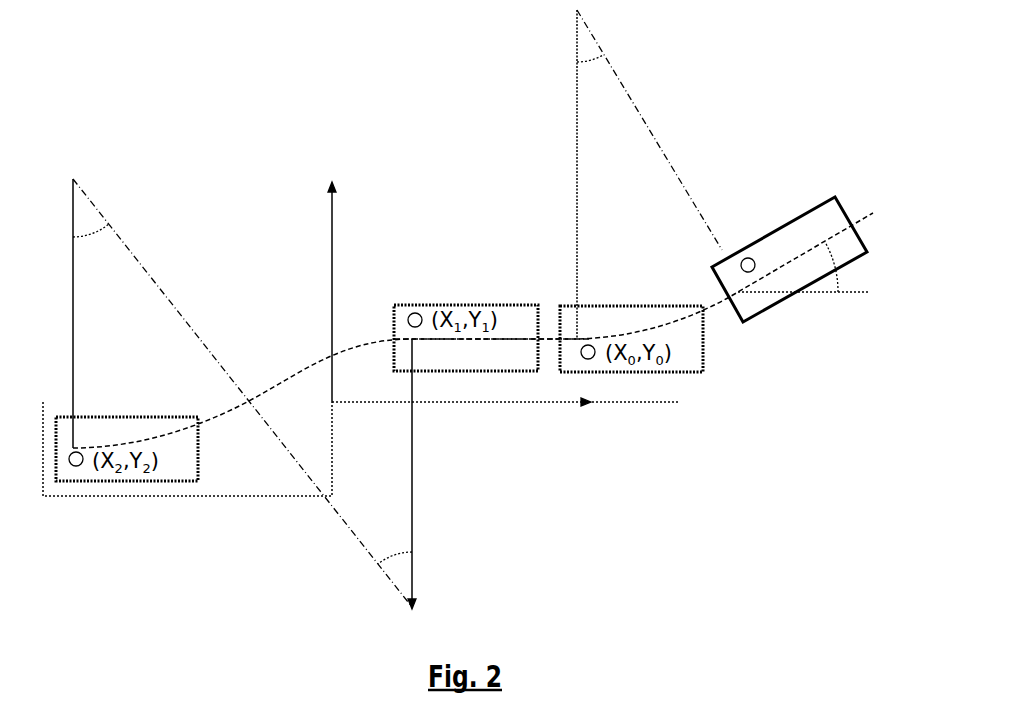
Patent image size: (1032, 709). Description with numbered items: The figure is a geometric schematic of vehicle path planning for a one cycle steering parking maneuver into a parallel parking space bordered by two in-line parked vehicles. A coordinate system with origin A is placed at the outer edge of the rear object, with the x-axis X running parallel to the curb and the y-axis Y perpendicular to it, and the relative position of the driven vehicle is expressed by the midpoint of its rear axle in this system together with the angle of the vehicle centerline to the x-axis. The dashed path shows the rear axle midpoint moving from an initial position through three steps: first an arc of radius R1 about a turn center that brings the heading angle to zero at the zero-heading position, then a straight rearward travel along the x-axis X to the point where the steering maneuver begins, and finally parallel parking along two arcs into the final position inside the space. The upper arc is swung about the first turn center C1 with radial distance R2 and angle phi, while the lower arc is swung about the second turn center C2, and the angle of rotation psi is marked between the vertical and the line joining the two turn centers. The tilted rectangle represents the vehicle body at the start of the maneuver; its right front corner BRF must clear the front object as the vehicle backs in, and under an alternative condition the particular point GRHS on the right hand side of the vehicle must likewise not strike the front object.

The right front corner of the vehicle BRF is at (864, 256).
The particular point on the right hand side of the vehicle GRHS is at (761, 315).
The first turn center C1 is at (491, 302).
The turn center of second arc C2 is at (242, 379).
The radial distance from initial turn center R1 is at (425, 474).
The radial distance from first turn center R2 is at (397, 229).
The origin A is at (197, 436).
The x-axis X is at (506, 412).
The y-axis Y is at (340, 286).